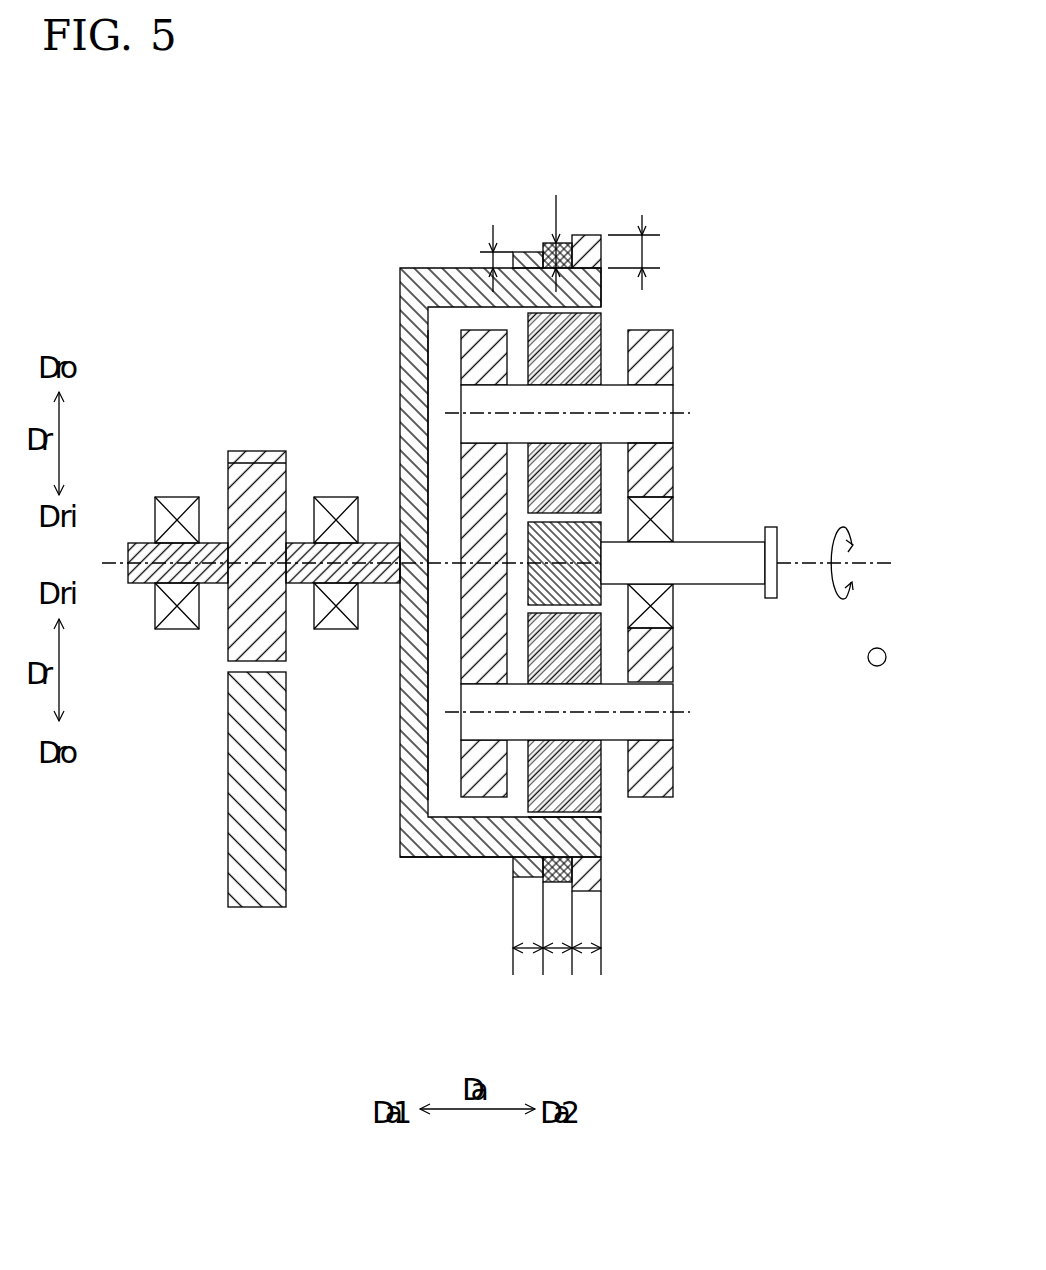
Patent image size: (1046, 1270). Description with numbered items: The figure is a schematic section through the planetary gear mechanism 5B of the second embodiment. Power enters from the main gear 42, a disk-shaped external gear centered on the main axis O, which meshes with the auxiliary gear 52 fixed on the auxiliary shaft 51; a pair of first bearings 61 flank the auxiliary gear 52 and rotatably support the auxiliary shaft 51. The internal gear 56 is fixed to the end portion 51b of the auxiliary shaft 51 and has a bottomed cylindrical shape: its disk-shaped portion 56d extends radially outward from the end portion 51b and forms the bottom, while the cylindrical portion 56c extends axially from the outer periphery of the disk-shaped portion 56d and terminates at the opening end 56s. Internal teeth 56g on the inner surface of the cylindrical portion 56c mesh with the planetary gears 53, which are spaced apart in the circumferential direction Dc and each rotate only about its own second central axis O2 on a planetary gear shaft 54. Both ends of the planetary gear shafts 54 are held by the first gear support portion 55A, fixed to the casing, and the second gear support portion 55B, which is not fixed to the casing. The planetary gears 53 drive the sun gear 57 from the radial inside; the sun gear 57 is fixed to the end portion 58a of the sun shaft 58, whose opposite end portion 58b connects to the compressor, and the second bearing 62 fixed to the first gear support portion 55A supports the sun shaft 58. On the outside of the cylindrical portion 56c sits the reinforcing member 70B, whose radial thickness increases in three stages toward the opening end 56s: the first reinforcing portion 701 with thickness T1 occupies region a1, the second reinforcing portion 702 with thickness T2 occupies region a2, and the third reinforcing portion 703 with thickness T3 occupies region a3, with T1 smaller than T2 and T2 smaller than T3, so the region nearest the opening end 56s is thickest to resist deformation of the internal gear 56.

The planetary gear mechanism 5B is at (368, 296).
The internal gear 56 is at (458, 262).
The disk-shaped portion 56d is at (413, 400).
The opening end 56s is at (603, 289).
The cylindrical portion 56c is at (473, 850).
The internal teeth 56g is at (603, 815).
The first reinforcing portion 701 is at (512, 252).
The second reinforcing portion 702 is at (556, 245).
The third reinforcing portion 703 is at (588, 235).
The reinforcing member 70B is at (582, 228).
The thickness of the first reinforcing portion T1 is at (489, 246).
The thickness of the second reinforcing portion T2 is at (552, 235).
The thickness of the third reinforcing portion T3 is at (644, 253).
The second gear support portion 55B is at (468, 335).
The first gear support portion 55A is at (673, 358).
The planetary gear 53 is at (585, 342).
The sun gear 57 is at (530, 540).
The end portion 58a is at (610, 550).
The planetary gear shaft 54 is at (668, 405).
The second central axis O2 is at (685, 413).
The second bearing 62 is at (662, 610).
The sun shaft 58 is at (697, 552).
The end portion 58b is at (772, 527).
The auxiliary shaft 51 is at (137, 580).
The end portion 51b is at (393, 592).
The first bearing 61 is at (177, 502).
The auxiliary gear 52 is at (258, 462).
The main gear 42 is at (242, 826).
The region a1 is at (527, 952).
The region a2 is at (559, 953).
The region a3 is at (588, 953).
The circumferential direction Dc is at (823, 587).
The main axis O is at (892, 570).